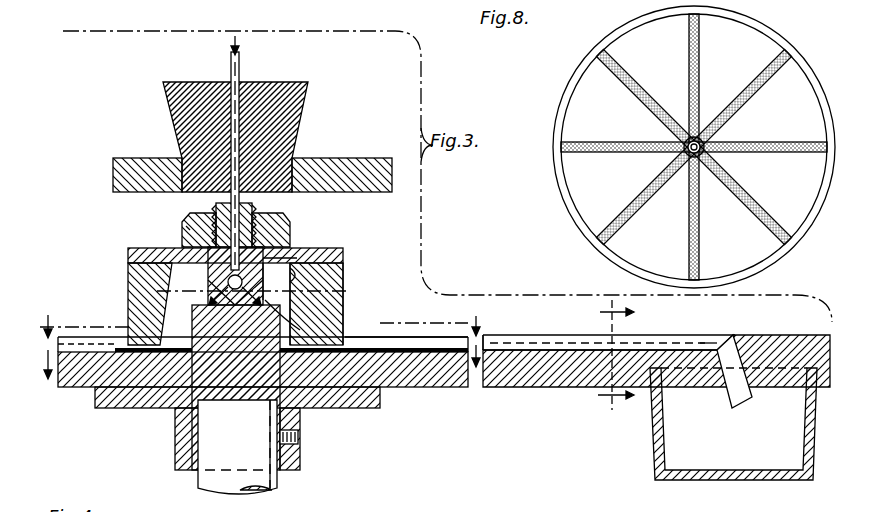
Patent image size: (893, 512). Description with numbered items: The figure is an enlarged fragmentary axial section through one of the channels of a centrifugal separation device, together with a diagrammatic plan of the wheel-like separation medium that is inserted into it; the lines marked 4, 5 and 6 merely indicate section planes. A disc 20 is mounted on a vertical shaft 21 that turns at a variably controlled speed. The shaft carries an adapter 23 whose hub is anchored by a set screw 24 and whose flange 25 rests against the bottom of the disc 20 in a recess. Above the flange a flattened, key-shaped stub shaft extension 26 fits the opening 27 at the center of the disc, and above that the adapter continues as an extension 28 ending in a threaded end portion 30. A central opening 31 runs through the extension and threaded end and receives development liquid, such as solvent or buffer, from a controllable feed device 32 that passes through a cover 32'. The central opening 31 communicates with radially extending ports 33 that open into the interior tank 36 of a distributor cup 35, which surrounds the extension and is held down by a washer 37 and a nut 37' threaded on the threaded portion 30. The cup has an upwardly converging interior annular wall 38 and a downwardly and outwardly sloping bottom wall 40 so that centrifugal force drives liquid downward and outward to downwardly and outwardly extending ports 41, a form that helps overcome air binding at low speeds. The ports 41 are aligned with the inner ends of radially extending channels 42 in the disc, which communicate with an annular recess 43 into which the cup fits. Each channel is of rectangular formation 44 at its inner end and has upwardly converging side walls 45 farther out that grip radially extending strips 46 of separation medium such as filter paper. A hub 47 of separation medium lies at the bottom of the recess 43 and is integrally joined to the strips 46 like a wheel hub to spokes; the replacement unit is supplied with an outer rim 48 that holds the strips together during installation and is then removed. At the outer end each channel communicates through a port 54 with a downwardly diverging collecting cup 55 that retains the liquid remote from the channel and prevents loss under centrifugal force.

In FIG. 3, the section line 4- 4 is at (260, 313).
In FIG. 3, the section line 5- 5 is at (262, 370).
In FIG. 3, the section line 6- 6 is at (615, 358).
In FIG. 3, the disc 20 is at (580, 384).
In FIG. 3, the shaft 21 is at (277, 488).
In FIG. 3, the adapter 23 is at (300, 414).
In FIG. 3, the set screw 24 is at (298, 440).
In FIG. 3, the flange 25 is at (380, 402).
In FIG. 3, the stub shaft extension 26 is at (175, 415).
In FIG. 3, the opening 27 is at (237, 447).
In FIG. 3, the extension 28 is at (297, 258).
In FIG. 3, the threaded end portion 30 is at (250, 207).
In FIG. 3, the central opening 31 is at (268, 231).
In FIG. 3, the controllable feed device 32 is at (257, 153).
In FIG. 3, the cover 32' is at (252, 137).
In FIG. 3, the radially extending ports 33 is at (330, 286).
In FIG. 3, the distributor cup 35 is at (345, 268).
In FIG. 3, the interior tank 36 is at (345, 262).
In FIG. 3, the washer 37 is at (232, 243).
In FIG. 3, the nut 37' is at (169, 214).
In FIG. 3, the upwardly converging interior annular wall 38 is at (130, 280).
In FIG. 3, the downwardly and outwardly sloping bottom wall 40 is at (300, 310).
In FIG. 3, the downwardly and outwardly extending ports 41 is at (377, 324).
In FIG. 3, the radially extending channels 42 is at (541, 348).
In FIG. 8, the radially extending channels 42 is at (699, 82).
In FIG. 3, the annular recess 43 is at (122, 348).
In FIG. 3, the rectangular formation 44 is at (498, 340).
In FIG. 3, the upwardly converging side walls 45 is at (656, 322).
In FIG. 3, the strips of separation medium 46 is at (447, 352).
In FIG. 8, the strips of separation medium 46 is at (756, 88).
In FIG. 8, the hub of separation medium 47 is at (712, 152).
In FIG. 8, the outer rim 48 is at (560, 193).
In FIG. 3, the port 54 is at (738, 402).
In FIG. 3, the collecting cup 55 is at (805, 432).